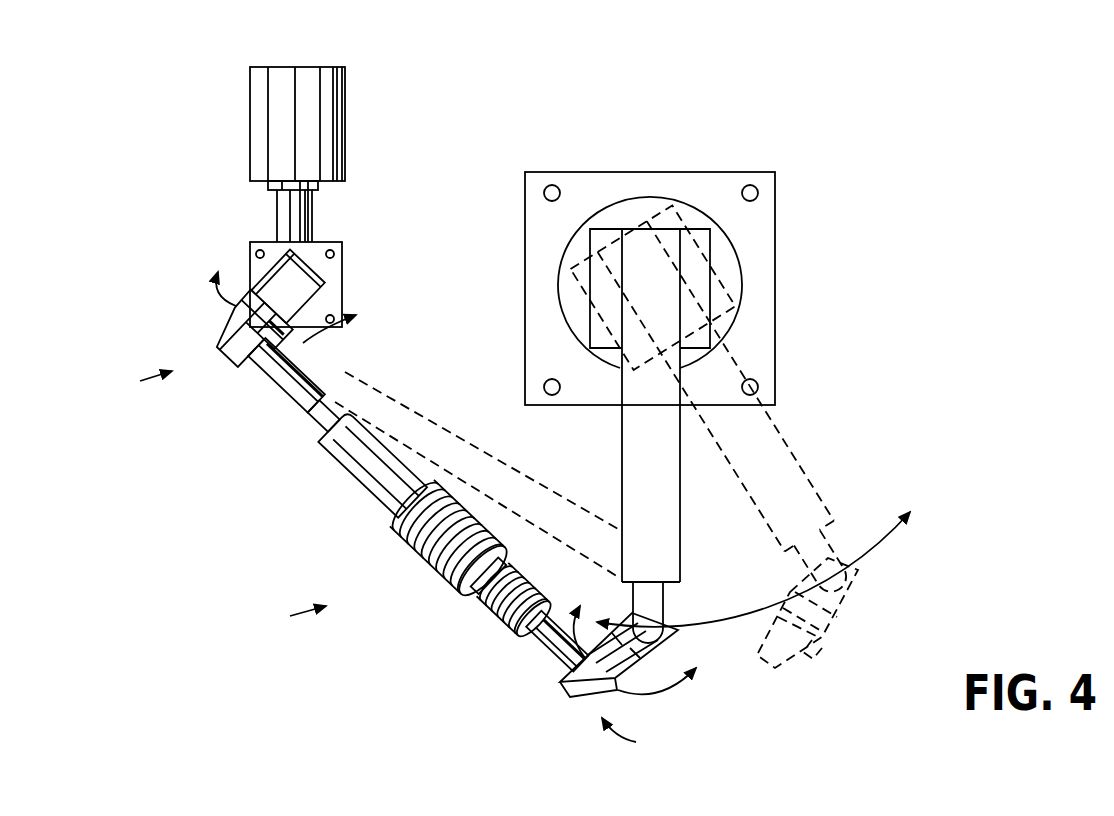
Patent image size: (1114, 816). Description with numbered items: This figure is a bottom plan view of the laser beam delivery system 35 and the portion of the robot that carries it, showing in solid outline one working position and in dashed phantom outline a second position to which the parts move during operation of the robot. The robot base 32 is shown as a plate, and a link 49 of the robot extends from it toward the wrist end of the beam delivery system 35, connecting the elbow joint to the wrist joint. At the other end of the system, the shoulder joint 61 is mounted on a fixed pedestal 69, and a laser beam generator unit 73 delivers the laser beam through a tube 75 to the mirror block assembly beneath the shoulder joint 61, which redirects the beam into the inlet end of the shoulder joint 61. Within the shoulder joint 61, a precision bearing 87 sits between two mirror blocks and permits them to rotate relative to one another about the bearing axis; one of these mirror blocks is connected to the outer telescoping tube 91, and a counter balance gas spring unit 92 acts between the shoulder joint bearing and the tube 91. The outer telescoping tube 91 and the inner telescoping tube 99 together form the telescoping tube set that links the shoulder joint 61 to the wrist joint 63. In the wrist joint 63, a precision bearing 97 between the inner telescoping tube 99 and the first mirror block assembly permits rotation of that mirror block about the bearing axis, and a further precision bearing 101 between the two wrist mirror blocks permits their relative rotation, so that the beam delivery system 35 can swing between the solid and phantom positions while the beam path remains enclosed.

The robot base 32 is at (776, 288).
The beam delivery system 35 is at (287, 616).
The link 49 is at (622, 452).
The shoulder joint 61 is at (136, 382).
The wrist joint 63 is at (625, 741).
The fixed pedestal 69 is at (342, 270).
The laser beam generator unit 73 is at (250, 133).
The tube 75 is at (278, 214).
The precision bearing 87 is at (246, 292).
The outer telescoping tube 91 is at (287, 394).
The counter balance gas spring unit 92 is at (307, 354).
The precision bearing 97 is at (542, 657).
The inner telescoping tube 99 is at (468, 580).
The precision bearing 101 is at (640, 688).